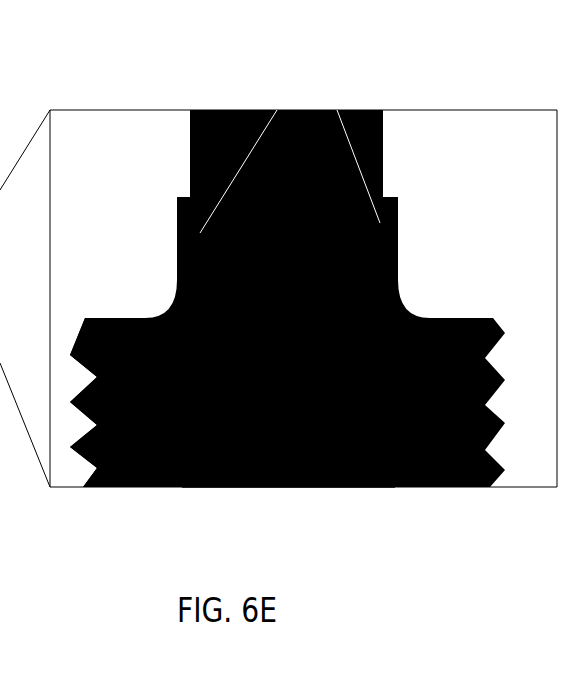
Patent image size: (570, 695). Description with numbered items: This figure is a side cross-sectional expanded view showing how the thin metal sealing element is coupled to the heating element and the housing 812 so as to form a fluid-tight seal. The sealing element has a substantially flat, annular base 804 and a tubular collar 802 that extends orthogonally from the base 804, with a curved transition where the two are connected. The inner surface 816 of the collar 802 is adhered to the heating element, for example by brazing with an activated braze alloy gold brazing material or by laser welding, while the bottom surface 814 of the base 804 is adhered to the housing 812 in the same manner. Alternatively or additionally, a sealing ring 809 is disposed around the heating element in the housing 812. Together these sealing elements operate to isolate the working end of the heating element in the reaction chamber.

The collar 802 is at (388, 263).
The base 804 is at (455, 320).
The sealing ring 809 is at (416, 496).
The housing 812 is at (100, 487).
The bottom surface 814 is at (288, 510).
The inner surface 816 is at (337, 110).